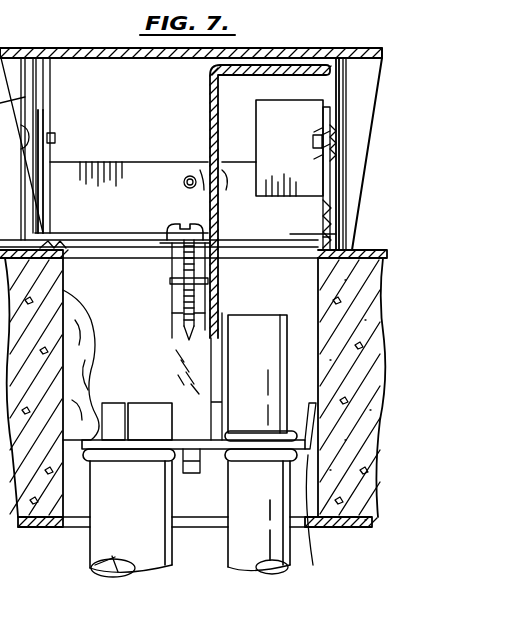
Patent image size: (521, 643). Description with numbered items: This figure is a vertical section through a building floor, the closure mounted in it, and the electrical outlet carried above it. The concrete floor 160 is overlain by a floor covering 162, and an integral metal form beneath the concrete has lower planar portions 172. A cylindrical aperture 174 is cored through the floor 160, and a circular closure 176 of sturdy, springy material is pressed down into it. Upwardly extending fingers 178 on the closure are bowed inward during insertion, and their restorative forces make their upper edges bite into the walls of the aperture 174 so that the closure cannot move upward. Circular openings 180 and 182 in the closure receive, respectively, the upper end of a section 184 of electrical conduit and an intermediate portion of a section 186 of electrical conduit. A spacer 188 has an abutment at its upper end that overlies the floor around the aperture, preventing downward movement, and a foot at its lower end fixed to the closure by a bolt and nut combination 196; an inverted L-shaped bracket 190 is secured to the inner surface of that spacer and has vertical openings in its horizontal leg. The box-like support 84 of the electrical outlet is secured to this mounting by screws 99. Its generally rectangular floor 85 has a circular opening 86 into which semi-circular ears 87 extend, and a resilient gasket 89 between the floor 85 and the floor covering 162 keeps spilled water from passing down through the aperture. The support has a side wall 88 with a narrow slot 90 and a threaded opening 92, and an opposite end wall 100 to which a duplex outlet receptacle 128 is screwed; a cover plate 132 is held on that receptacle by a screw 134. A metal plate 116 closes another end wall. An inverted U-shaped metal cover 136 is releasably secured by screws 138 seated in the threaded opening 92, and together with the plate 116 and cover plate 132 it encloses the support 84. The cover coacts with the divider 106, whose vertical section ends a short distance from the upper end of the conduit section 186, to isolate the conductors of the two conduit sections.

The metal cover 136 is at (306, 48).
The metal plate 116 is at (37, 80).
The divider 106 is at (208, 93).
The cover plate 132 is at (345, 80).
The duplex outlet receptacle 128 is at (328, 110).
The screw 134 is at (332, 150).
The support 84 is at (147, 156).
The threaded opening 92 is at (192, 174).
The side wall 88 is at (242, 166).
The screws 138 is at (183, 183).
The floor 85 is at (62, 237).
The circular opening 86 is at (58, 244).
The semi-circular ears 87 is at (170, 230).
The narrow slot 90 is at (227, 176).
The wall 100 is at (340, 218).
The resilient gasket 89 is at (345, 245).
The floor covering 162 is at (380, 262).
The screws 99 is at (168, 266).
The inverted L-shaped bracket 190 is at (168, 298).
The section of electrical conduit 186 is at (268, 314).
The cylindrical aperture 174 is at (313, 323).
The spacer 188 is at (182, 351).
The fingers 178 is at (142, 407).
The circular opening 180 is at (102, 464).
The bolt and nut combination 196 is at (186, 472).
The circular opening 182 is at (243, 462).
The lower planar portions 172 is at (50, 530).
The concrete floor 160 is at (15, 528).
The section of electrical conduit 184 is at (117, 575).
The closure 176 is at (311, 552).